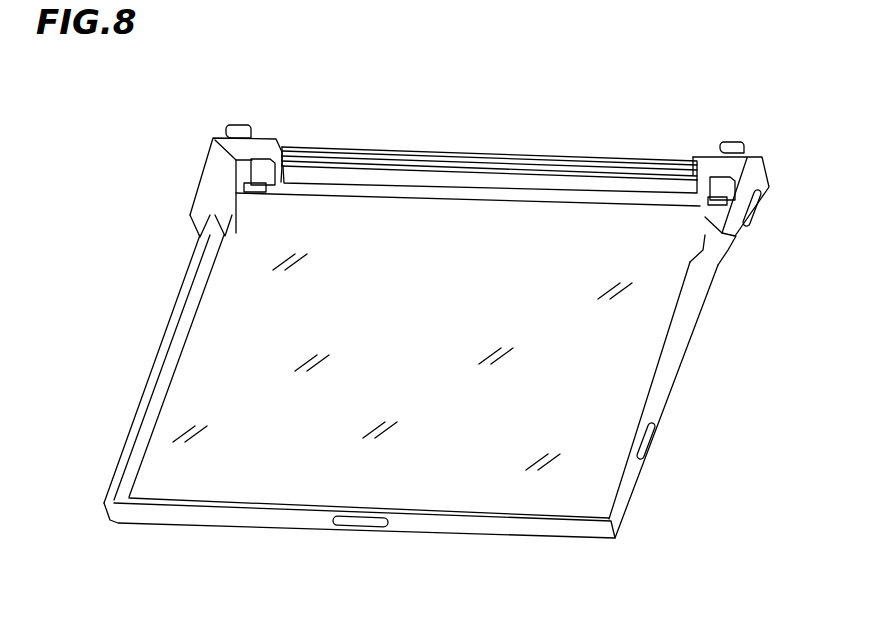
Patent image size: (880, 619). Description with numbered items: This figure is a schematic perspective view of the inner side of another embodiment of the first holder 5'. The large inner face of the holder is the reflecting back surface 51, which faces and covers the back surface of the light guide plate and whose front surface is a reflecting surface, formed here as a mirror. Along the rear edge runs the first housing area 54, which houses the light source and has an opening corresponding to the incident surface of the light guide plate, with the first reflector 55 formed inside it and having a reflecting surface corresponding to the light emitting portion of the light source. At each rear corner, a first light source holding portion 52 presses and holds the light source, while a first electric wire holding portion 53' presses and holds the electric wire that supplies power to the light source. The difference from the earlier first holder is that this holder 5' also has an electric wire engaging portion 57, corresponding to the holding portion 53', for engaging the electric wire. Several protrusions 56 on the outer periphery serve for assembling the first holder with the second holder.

The first holder 5' is at (420, 376).
The reflecting back surface 51 is at (600, 328).
The first light source holding portion 52 is at (243, 185).
The first electric wire holding portion 53' is at (469, 162).
The first housing area 54 is at (458, 196).
The first reflector 55 is at (526, 178).
The protrusions 56 is at (358, 528).
The electric wire engaging portion 57 is at (242, 124).